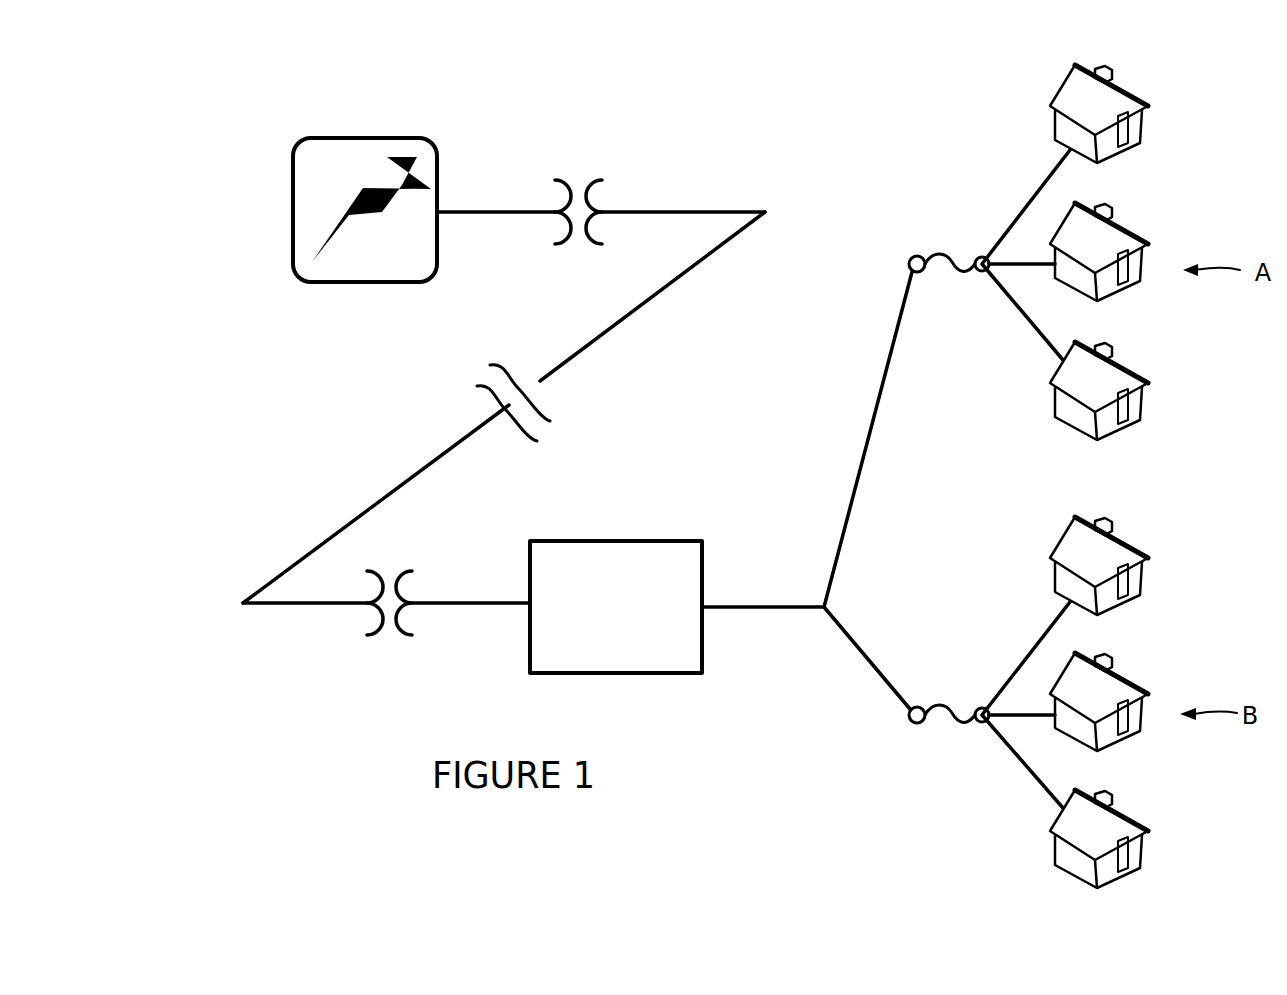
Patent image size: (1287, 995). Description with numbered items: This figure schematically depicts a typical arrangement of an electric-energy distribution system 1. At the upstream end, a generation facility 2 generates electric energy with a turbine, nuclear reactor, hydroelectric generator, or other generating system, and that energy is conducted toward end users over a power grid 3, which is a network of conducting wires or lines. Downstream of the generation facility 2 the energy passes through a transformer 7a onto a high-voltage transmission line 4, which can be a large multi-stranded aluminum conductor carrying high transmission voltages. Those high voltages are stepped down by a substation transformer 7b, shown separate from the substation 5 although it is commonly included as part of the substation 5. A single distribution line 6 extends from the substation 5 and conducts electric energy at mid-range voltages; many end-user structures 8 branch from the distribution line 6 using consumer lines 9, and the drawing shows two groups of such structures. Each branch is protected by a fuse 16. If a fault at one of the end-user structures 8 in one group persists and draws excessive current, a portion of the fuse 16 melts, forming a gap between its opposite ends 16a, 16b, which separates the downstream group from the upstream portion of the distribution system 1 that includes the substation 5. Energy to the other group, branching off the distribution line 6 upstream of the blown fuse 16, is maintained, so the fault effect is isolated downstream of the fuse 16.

The electric-energy distribution system 1 is at (863, 173).
The generation facility 2 is at (293, 165).
The power grid 3 is at (741, 207).
The high-voltage transmission line 4 is at (667, 290).
The substation 5 is at (637, 541).
The distribution line 6 is at (755, 607).
The transformer 7a is at (590, 183).
The substation transformer 7b is at (368, 635).
The end-user structures 8 is at (1148, 106).
The consumer lines 9 is at (1036, 194).
The fuse 16 is at (961, 270).
The end of fuse 16a is at (917, 256).
The end of fuse 16b is at (982, 257).